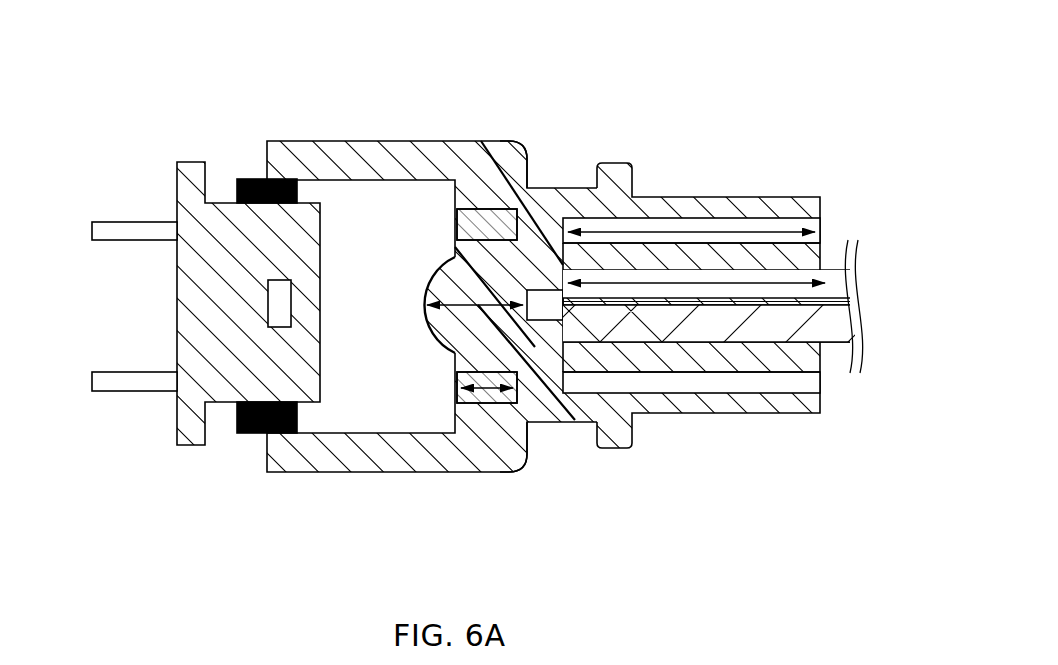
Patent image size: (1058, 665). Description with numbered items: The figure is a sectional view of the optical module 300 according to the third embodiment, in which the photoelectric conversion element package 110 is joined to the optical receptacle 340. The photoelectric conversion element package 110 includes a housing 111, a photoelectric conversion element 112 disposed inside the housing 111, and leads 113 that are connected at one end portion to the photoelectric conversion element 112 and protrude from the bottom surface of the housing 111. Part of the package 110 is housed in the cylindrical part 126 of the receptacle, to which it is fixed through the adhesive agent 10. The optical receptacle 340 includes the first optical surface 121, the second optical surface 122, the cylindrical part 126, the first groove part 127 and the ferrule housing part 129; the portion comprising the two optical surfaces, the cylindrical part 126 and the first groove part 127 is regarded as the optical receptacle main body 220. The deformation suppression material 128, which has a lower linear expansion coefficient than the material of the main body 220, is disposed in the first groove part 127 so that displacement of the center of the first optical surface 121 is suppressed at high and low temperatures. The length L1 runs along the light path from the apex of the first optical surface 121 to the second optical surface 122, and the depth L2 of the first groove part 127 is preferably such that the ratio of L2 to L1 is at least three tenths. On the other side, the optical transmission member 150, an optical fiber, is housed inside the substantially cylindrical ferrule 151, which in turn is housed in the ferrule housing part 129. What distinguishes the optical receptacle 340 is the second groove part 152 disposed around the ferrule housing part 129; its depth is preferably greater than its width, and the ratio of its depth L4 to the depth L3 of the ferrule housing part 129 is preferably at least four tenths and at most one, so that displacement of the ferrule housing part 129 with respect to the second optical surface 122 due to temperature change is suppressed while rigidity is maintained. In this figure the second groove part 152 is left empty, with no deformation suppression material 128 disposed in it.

The adhesive agent 10 is at (247, 173).
The photoelectric conversion element package 110 is at (205, 136).
The housing 111 is at (217, 410).
The photoelectric conversion element 112 is at (282, 322).
The lead 113 is at (130, 395).
The first optical surface 121 is at (434, 305).
The second optical surface 122 is at (531, 303).
The cylindrical part 126 is at (376, 162).
The first groove part 127 is at (471, 208).
The deformation suppression material 128 is at (488, 222).
The ferrule housing part 129 is at (613, 323).
The optical transmission member 150 is at (660, 303).
The ferrule 151 is at (760, 350).
The second groove part 152 is at (712, 380).
The optical receptacle main body 220 is at (501, 157).
The optical module 300 is at (737, 75).
The optical receptacle 340 is at (636, 159).
The length L1 is at (500, 330).
The depth L2 is at (485, 403).
The depth L3 is at (760, 283).
The depth L4 is at (705, 226).